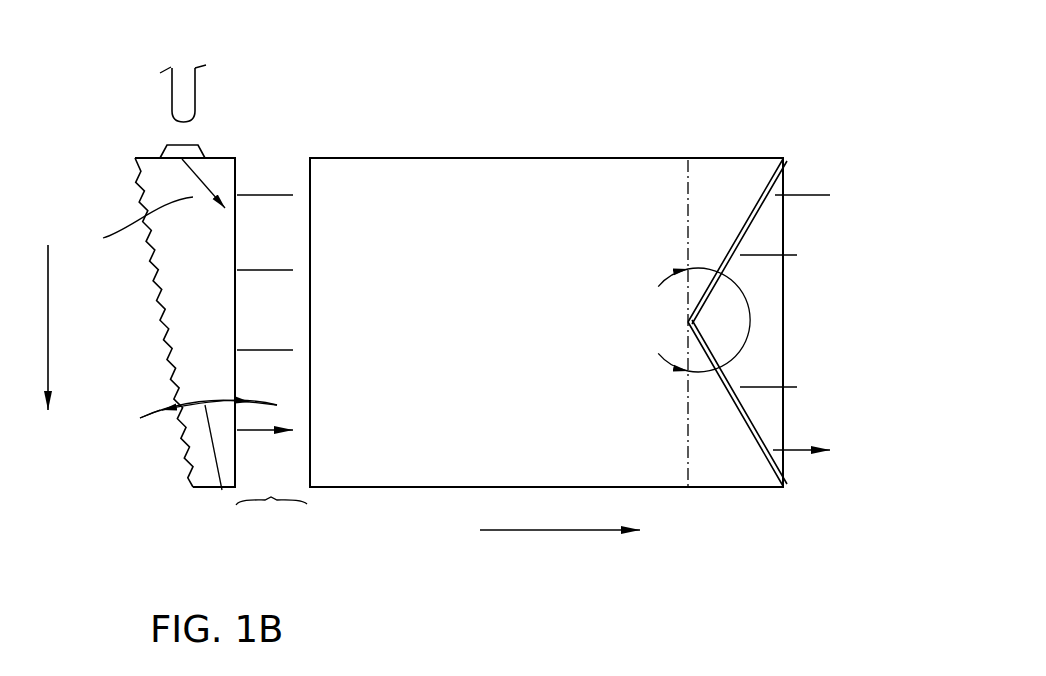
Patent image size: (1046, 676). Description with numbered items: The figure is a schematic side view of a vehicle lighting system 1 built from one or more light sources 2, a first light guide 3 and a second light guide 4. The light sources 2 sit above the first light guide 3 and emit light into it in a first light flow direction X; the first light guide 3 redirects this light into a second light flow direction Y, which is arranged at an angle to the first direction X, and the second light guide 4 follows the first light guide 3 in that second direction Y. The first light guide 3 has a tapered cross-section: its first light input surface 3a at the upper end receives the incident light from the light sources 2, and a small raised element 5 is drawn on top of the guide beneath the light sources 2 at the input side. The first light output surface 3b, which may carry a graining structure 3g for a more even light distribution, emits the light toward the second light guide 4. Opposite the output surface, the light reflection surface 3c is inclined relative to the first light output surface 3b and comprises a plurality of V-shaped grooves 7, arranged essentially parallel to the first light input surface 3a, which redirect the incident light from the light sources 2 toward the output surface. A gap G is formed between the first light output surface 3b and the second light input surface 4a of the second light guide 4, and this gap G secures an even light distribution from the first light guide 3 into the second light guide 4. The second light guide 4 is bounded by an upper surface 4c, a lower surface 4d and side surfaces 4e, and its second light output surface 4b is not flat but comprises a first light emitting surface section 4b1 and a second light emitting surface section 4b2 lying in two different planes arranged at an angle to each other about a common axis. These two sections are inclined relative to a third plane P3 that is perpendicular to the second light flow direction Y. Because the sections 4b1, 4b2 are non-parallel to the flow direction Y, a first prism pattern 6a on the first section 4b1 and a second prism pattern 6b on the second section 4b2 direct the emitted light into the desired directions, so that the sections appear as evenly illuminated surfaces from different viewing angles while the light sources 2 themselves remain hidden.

The vehicle lighting system 1 is at (234, 53).
The light source 2 is at (178, 98).
The first light guide 3 is at (237, 138).
The first light input surface 3a is at (150, 157).
The first light output surface 3b is at (237, 455).
The light reflection surface 3c is at (150, 277).
The graining structure 3g is at (238, 178).
The second light guide 4 is at (604, 137).
The second light input surface 4a is at (310, 457).
The second light output surface 4b is at (787, 322).
The first light emitting surface section 4b1 is at (760, 208).
The second light emitting surface section 4b2 is at (760, 434).
The upper surface 4c is at (383, 156).
The lower surface 4d is at (381, 487).
The side surface 4e is at (446, 213).
The protrusion 5 is at (162, 150).
The first prism pattern 6a is at (737, 268).
The second prism pattern 6b is at (733, 378).
The groove 7 is at (140, 186).
The third plane P3 is at (692, 188).
The gap G is at (271, 368).
The first light flow direction X is at (61, 327).
The second light flow direction Y is at (560, 549).